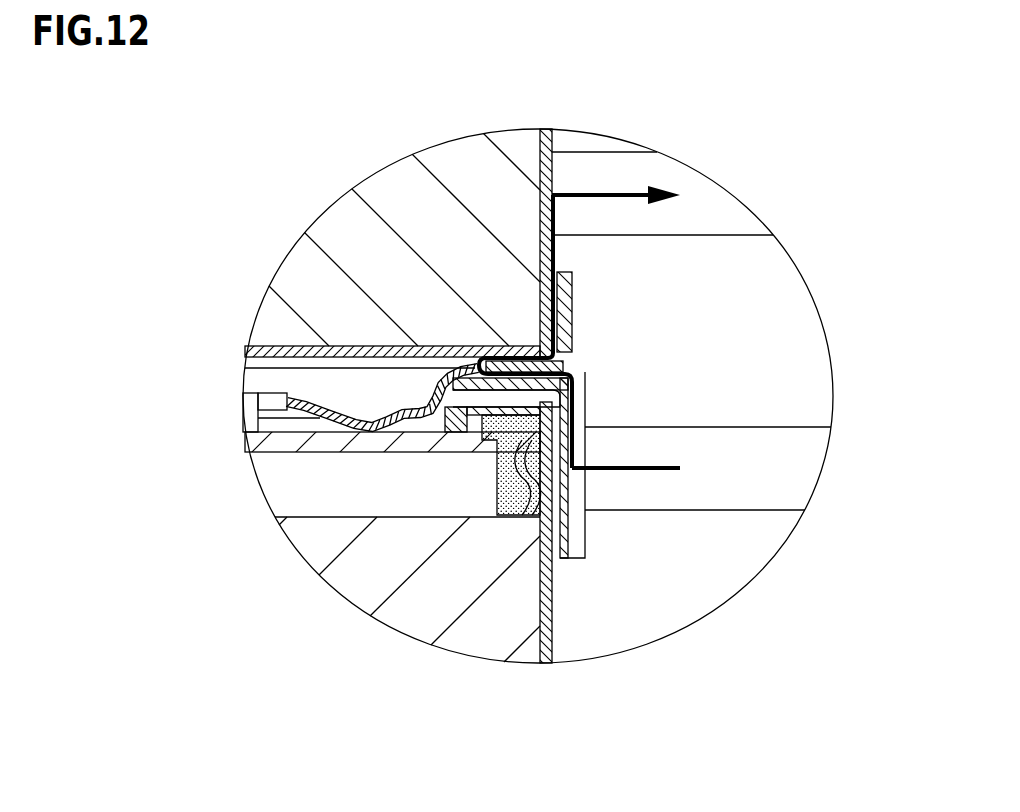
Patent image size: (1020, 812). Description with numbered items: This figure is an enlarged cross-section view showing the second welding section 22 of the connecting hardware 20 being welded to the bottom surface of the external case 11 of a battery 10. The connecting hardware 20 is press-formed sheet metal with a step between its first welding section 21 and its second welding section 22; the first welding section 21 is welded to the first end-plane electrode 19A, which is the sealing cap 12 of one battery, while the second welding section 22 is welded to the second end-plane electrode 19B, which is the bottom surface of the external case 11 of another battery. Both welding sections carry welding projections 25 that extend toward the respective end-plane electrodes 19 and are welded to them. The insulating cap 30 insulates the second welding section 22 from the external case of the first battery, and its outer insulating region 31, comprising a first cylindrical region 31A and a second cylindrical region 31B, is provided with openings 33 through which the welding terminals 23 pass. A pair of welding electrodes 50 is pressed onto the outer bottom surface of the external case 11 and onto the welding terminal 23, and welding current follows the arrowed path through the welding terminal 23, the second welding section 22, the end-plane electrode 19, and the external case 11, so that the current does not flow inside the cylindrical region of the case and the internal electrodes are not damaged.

The battery 10 is at (570, 141).
The external case 11 is at (555, 252).
The sealing cap 12 is at (440, 447).
The end-plane electrode 19 is at (247, 553).
The first end-plane electrode 19A is at (393, 443).
The second end-plane electrode 19B is at (405, 520).
The connecting hardware 20 is at (360, 383).
The first welding section 21 is at (405, 520).
The second welding section 22 is at (463, 346).
The welding terminal 23 is at (580, 440).
The welding projection 25 is at (523, 346).
The insulating cap 30 is at (585, 287).
The outer insulating region 31 is at (757, 272).
The first cylindrical region 31A is at (567, 550).
The second cylindrical region 31B is at (563, 307).
The openings 33 is at (576, 365).
The welding electrodes 50 is at (597, 152).